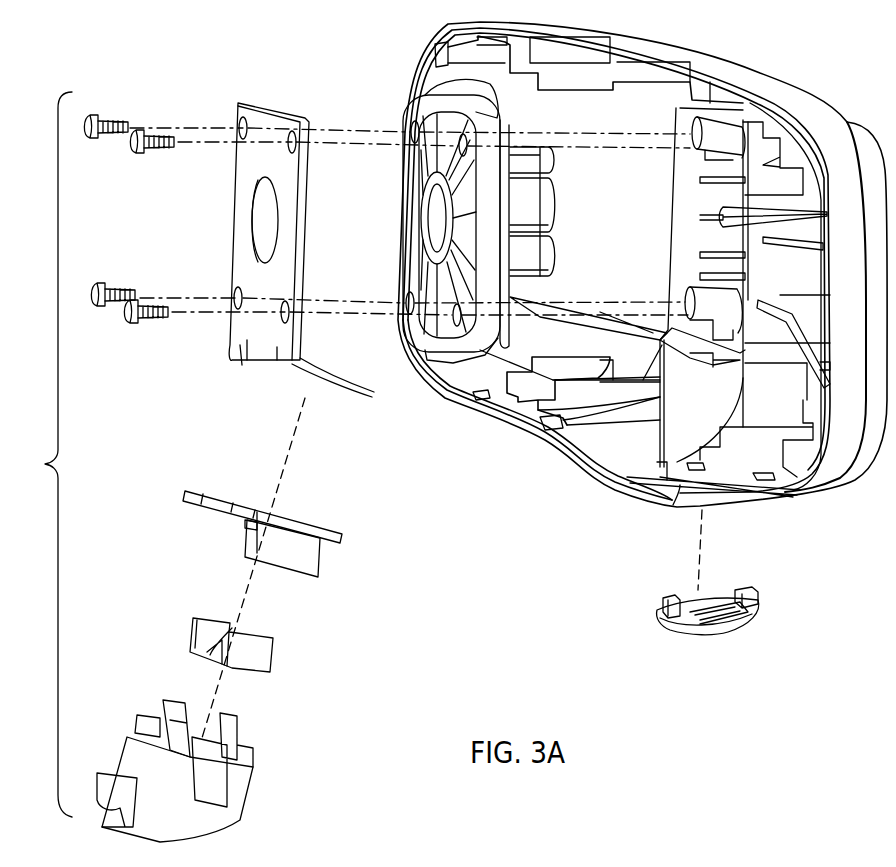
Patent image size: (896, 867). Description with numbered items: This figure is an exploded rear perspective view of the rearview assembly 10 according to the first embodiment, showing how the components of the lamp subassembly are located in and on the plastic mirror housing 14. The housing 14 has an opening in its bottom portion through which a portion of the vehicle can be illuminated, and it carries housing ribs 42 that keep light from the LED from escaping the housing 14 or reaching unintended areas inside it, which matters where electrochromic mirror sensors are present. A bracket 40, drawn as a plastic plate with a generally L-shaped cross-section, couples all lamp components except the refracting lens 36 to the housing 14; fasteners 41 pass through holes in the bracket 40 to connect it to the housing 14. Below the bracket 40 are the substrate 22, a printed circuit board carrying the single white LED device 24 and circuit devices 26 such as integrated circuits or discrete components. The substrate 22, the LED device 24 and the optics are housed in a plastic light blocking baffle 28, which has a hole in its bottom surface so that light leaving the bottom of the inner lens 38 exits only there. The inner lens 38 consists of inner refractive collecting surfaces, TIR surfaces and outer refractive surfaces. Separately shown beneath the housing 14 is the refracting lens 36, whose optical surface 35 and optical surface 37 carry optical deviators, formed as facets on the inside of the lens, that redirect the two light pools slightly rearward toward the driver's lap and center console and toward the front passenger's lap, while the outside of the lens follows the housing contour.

The rearview assembly 10 is at (47, 454).
The housing 14 is at (783, 88).
The substrate 22 is at (198, 487).
The single white LED device 24 is at (247, 525).
The circuit devices 26 is at (318, 558).
The light blocking baffle 28 is at (140, 762).
The optical surface 35 is at (692, 602).
The refracting lens 36 is at (643, 615).
The optical surface 37 is at (718, 603).
The inner lens 38 is at (213, 643).
The bracket 40 is at (272, 110).
The fasteners 41 is at (132, 148).
The housing ribs 42 is at (560, 426).